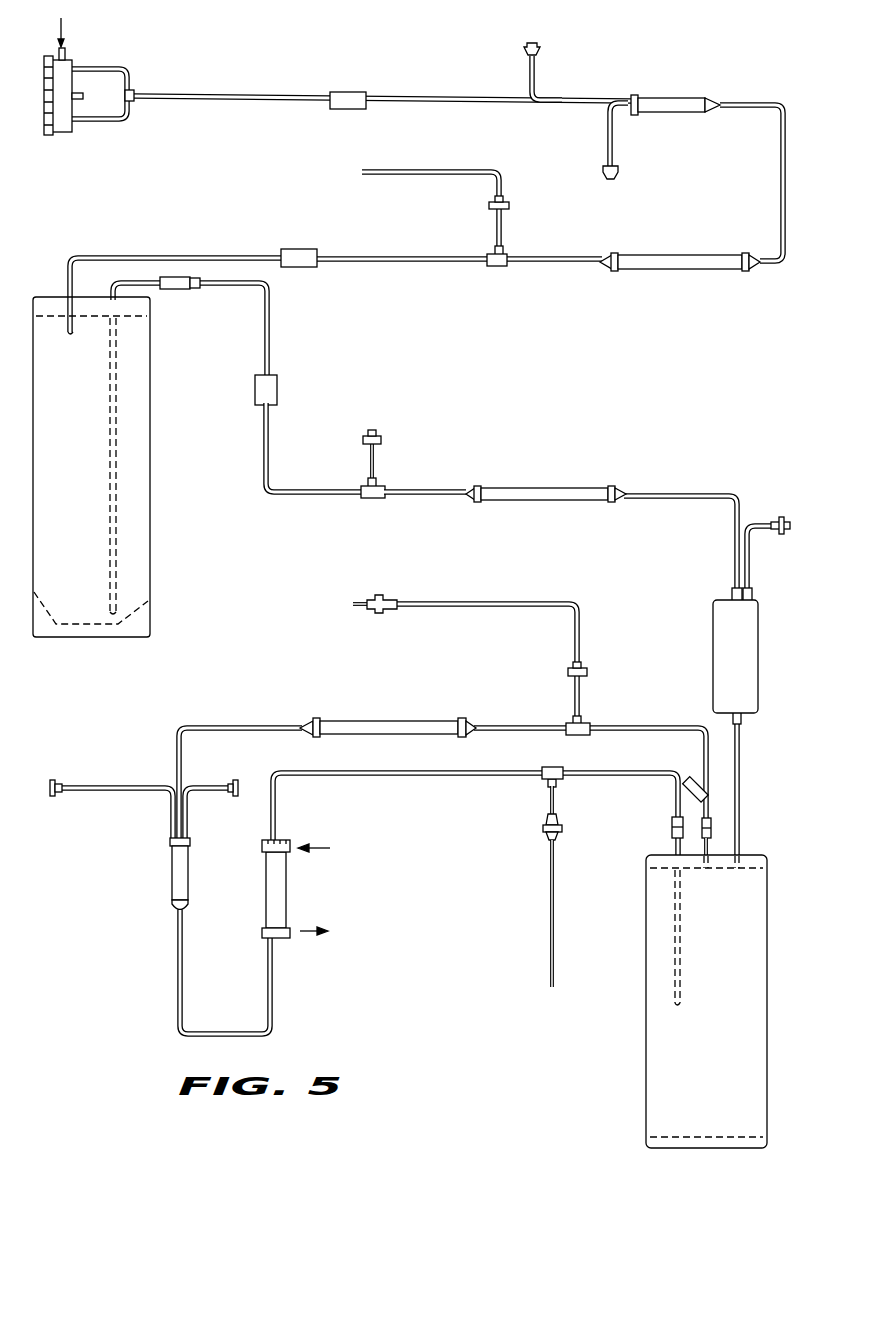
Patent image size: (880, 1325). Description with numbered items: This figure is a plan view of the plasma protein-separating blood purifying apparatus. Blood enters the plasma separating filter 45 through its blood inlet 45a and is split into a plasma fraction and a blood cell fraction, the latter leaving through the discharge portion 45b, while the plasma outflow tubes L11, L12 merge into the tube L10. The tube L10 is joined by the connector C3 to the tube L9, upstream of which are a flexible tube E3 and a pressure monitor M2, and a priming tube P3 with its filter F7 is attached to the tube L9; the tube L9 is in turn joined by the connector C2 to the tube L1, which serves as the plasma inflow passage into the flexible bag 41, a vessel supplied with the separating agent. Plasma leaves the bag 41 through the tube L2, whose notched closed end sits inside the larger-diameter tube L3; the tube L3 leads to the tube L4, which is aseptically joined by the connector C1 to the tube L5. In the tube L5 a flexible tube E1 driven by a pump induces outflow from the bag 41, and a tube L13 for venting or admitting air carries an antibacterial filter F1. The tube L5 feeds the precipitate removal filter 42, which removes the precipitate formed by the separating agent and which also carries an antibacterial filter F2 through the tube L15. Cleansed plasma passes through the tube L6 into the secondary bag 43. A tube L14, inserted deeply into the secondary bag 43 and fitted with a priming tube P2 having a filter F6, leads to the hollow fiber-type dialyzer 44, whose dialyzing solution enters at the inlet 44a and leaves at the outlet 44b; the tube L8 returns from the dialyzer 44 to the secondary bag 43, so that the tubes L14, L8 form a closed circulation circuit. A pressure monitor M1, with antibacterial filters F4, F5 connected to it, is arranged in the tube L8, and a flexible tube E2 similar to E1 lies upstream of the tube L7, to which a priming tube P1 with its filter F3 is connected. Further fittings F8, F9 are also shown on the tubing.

The flexible bag 41 is at (150, 451).
The precipitate removal filter 42 is at (758, 625).
The secondary bag 43 is at (760, 856).
The hollow fiber-type dialyzer 44 is at (290, 898).
The inlet 44a is at (284, 840).
The outlet 44b is at (292, 938).
The plasma separating filter 45 is at (80, 60).
The blood inlet 45a is at (65, 52).
The discharge portion 45b is at (81, 100).
The tube L1 is at (165, 252).
The tube L2 is at (158, 288).
The tube L3 is at (195, 290).
The tube L4 is at (270, 352).
The tube L5 is at (290, 497).
The tube L6 is at (740, 763).
The tube L7 is at (520, 724).
The tube L8 is at (232, 1030).
The tube L9 is at (480, 265).
The tube L10 is at (272, 96).
The plasma outflow tube L11 is at (122, 68).
The plasma outflow tube L12 is at (116, 124).
The tube L13 is at (378, 466).
The tube L14 is at (460, 779).
The tube L15 is at (752, 531).
The connector C1 is at (277, 390).
The connector C2 is at (316, 249).
The connector C3 is at (360, 92).
The flexible tube E1 is at (582, 488).
The flexible tube E2 is at (395, 720).
The flexible tube E3 is at (675, 270).
The pressure monitor M1 is at (172, 880).
The pressure monitor M2 is at (672, 112).
The antibacterial filter F1 is at (382, 438).
The antibacterial filter F2 is at (788, 536).
The filter F3 is at (590, 672).
The antibacterial filter F4 is at (56, 800).
The antibacterial filter F5 is at (236, 800).
The filter F6 is at (565, 832).
The filter F7 is at (510, 206).
The fitting F8 is at (612, 180).
The fitting F9 is at (540, 55).
The priming tube P1 is at (540, 602).
The priming tube P2 is at (556, 912).
The priming tube P3 is at (478, 173).